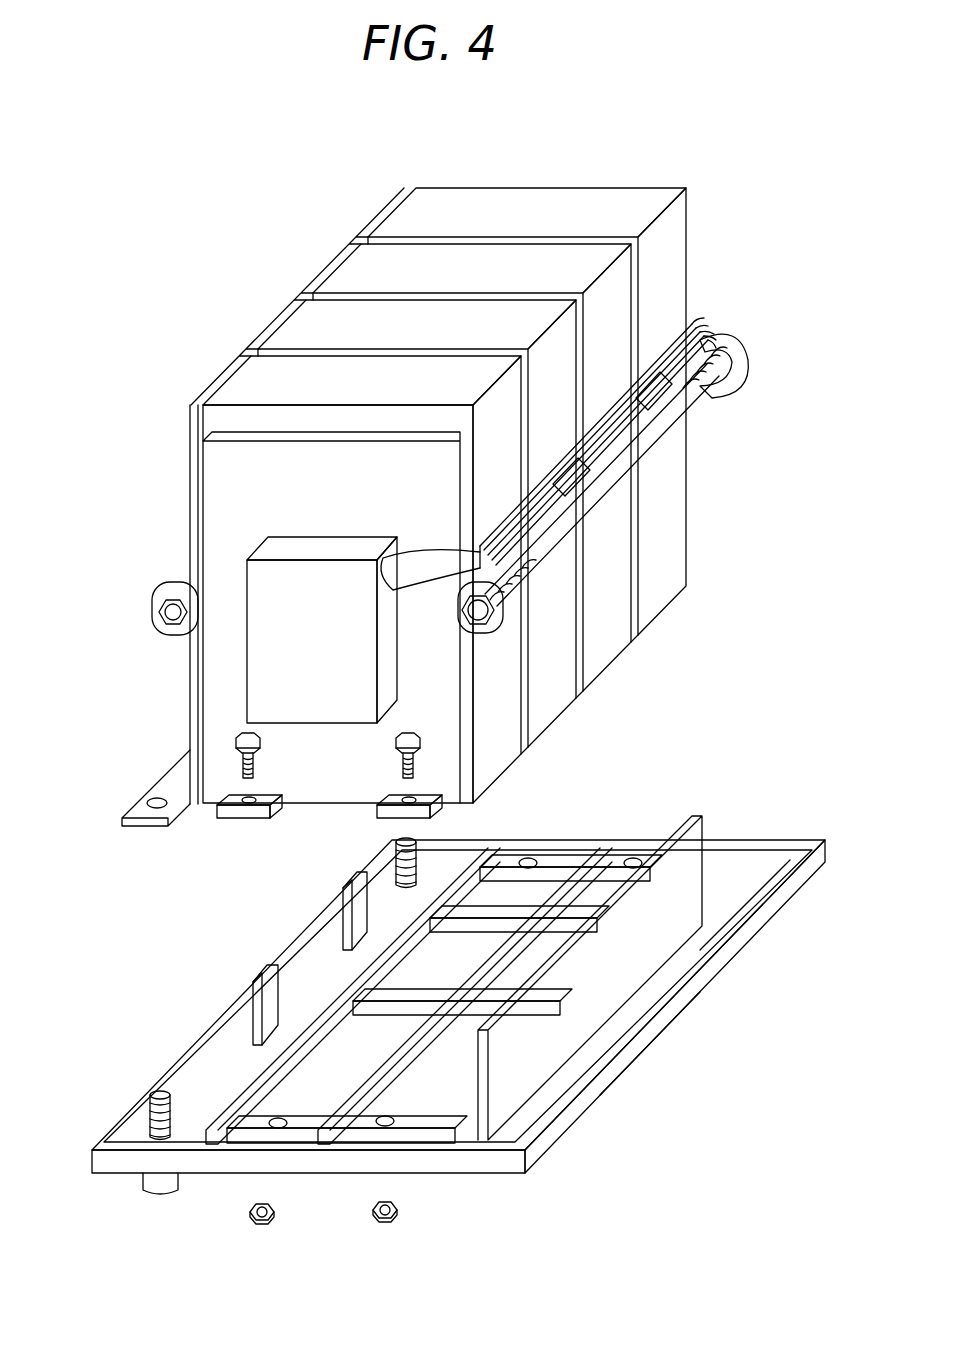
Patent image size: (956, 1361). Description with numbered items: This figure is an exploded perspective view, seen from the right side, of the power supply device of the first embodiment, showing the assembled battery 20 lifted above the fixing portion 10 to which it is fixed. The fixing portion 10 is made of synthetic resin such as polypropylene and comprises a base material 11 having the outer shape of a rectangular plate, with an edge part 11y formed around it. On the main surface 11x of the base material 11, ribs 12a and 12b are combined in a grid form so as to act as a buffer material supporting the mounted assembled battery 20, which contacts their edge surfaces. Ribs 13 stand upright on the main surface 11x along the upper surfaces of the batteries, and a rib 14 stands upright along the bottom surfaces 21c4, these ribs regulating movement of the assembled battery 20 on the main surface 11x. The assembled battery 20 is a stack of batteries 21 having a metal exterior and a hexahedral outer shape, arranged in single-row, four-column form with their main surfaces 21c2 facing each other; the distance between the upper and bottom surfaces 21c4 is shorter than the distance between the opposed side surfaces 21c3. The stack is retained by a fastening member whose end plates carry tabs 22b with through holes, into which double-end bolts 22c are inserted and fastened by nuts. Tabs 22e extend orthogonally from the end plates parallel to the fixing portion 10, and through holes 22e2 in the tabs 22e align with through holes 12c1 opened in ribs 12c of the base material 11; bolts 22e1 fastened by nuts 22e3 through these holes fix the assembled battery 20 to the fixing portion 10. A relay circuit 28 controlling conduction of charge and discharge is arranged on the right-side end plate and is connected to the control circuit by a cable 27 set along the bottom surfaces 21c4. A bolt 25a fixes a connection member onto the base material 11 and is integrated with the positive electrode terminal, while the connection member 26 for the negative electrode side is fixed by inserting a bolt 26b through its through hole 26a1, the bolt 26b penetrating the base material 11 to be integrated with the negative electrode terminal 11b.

The fixing portion 10 is at (614, 1102).
The base material 11 is at (700, 990).
The main surface 11x is at (755, 867).
The edge part 11y is at (645, 1040).
The negative electrode terminal 11b is at (158, 1187).
The rib 12a is at (375, 1108).
The rib 12b is at (397, 993).
The rib 12c is at (297, 1125).
The through hole 12c1 is at (270, 1120).
The rib 13 is at (258, 985).
The rib 14 is at (705, 818).
The assembled battery 20 is at (300, 272).
The battery 21 is at (578, 188).
The main surface 21c2 is at (212, 408).
The side surface 21c3 is at (420, 205).
The bottom surface 21c4 is at (680, 258).
The tab 22b is at (743, 375).
The double-end bolt 22c is at (655, 430).
The tab 22e is at (258, 816).
The bolt 22e1 is at (252, 736).
The through hole 22e2 is at (432, 796).
The nut 22e3 is at (262, 1222).
The bolt 25a is at (387, 851).
The connection member 26 is at (187, 767).
The through hole 26a1 is at (150, 797).
The bolt 26b is at (155, 1095).
The cable 27 is at (707, 325).
The relay circuit 28 is at (257, 595).